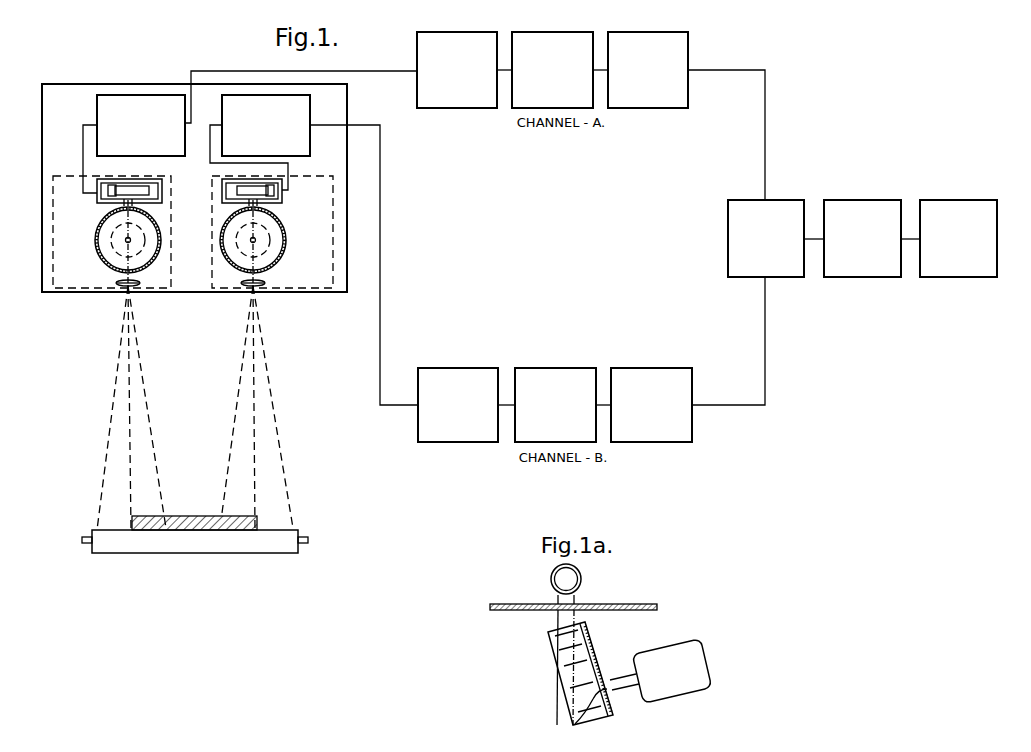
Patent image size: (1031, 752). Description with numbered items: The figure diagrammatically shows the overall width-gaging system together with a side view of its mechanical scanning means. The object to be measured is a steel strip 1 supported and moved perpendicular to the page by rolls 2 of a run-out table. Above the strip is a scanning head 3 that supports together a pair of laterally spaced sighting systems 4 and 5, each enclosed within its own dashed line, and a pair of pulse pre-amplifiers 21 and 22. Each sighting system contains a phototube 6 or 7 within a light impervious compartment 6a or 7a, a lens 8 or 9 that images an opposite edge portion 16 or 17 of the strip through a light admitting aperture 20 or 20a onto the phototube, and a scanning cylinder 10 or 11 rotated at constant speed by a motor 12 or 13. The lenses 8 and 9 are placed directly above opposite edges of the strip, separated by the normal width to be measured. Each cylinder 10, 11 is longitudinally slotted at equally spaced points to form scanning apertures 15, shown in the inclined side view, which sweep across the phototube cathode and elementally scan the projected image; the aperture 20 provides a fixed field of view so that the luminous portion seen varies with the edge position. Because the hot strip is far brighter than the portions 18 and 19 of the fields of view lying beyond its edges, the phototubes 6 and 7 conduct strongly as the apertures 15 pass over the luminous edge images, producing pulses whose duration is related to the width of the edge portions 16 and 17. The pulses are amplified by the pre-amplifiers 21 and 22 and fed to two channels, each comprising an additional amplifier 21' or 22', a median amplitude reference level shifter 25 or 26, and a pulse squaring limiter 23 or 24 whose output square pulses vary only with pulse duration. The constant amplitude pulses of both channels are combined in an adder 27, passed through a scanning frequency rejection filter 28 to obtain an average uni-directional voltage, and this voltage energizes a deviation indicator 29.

In FIG. 1, the steel strip 1 is at (196, 516).
In FIG. 1, the rolls 2 is at (263, 553).
In FIG. 1, the scanning head 3 is at (347, 188).
In FIG. 1, the sighting system 4 is at (171, 210).
In FIG. 1, the sighting system 5 is at (212, 247).
In FIG. 1, the phototube 6 is at (132, 189).
In FIG. 1, the light impervious compartment 6a is at (99, 198).
In FIG. 1, the phototube 7 is at (252, 189).
In FIG. 1A, the phototube 7 is at (581, 580).
In FIG. 1, the light impervious compartment 7a is at (283, 192).
In FIG. 1A, the light impervious compartment 7a is at (641, 604).
In FIG. 1, the lens 8 is at (122, 288).
In FIG. 1, the lens 9 is at (250, 288).
In FIG. 1, the scanning cylinder 10 is at (96, 248).
In FIG. 1, the scanning cylinder 11 is at (283, 258).
In FIG. 1A, the scanning cylinder 11 is at (553, 665).
In FIG. 1, the motor 12 is at (110, 244).
In FIG. 1, the motor 13 is at (243, 236).
In FIG. 1A, the motor 13 is at (672, 642).
In FIG. 1, the scanning apertures 15 is at (97, 235).
In FIG. 1A, the scanning apertures 15 is at (552, 631).
In FIG. 1, the edge portion 16 is at (143, 516).
In FIG. 1, the edge portion 17 is at (236, 516).
In FIG. 1, the portion of field of view 18 is at (113, 530).
In FIG. 1, the portion of field of view 19 is at (273, 530).
In FIG. 1, the light admitting aperture 20 is at (122, 204).
In FIG. 1, the light admitting aperture 20a is at (259, 203).
In FIG. 1A, the light admitting aperture 20a is at (556, 600).
In FIG. 1, the pre-amplifier 21 is at (241, 132).
In FIG. 1, the pre-amplifier 22 is at (307, 250).
In FIG. 1, the amplifier 21' is at (464, 59).
In FIG. 1, the amplifier 22' is at (466, 392).
In FIG. 1, the limiter 23 is at (648, 32).
In FIG. 1, the limiter 24 is at (650, 368).
In FIG. 1, the median amplitude reference level shifter 25 is at (552, 32).
In FIG. 1, the median amplitude reference level shifter 26 is at (555, 368).
In FIG. 1, the adder 27 is at (781, 200).
In FIG. 1, the filter 28 is at (860, 200).
In FIG. 1, the deviation indicator 29 is at (957, 200).